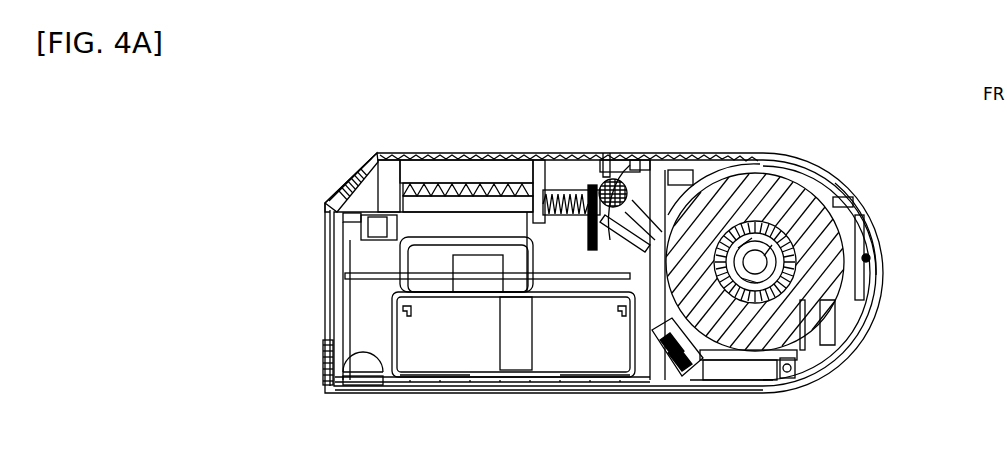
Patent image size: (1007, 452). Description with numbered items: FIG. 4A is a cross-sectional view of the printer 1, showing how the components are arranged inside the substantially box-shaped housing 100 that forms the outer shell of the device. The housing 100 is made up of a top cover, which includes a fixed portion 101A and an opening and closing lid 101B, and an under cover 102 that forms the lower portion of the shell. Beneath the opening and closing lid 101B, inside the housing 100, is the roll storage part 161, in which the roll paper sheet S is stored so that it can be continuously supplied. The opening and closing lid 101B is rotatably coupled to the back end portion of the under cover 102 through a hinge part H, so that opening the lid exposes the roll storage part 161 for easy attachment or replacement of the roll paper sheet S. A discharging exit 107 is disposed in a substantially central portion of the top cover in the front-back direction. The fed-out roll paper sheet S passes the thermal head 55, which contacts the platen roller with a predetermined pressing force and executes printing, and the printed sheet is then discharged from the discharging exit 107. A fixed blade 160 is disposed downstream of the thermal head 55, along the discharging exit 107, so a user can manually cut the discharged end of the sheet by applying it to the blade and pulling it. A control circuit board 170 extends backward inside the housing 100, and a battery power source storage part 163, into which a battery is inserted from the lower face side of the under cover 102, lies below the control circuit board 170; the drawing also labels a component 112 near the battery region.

The printer 1 is at (300, 228).
The housing 100 is at (338, 175).
The fixed portion 101A is at (393, 153).
The opening and closing lid 101B is at (833, 177).
The under cover 102 is at (650, 392).
The discharging exit 107 is at (607, 162).
The battery 112 is at (610, 372).
The fixed blade 160 is at (600, 165).
The roll storage part 161 is at (677, 352).
The battery power source storage part 163 is at (608, 378).
The control circuit board 170 is at (448, 277).
The thermal head 55 is at (627, 185).
The roll paper sheet S is at (793, 202).
The hinge part H is at (868, 250).